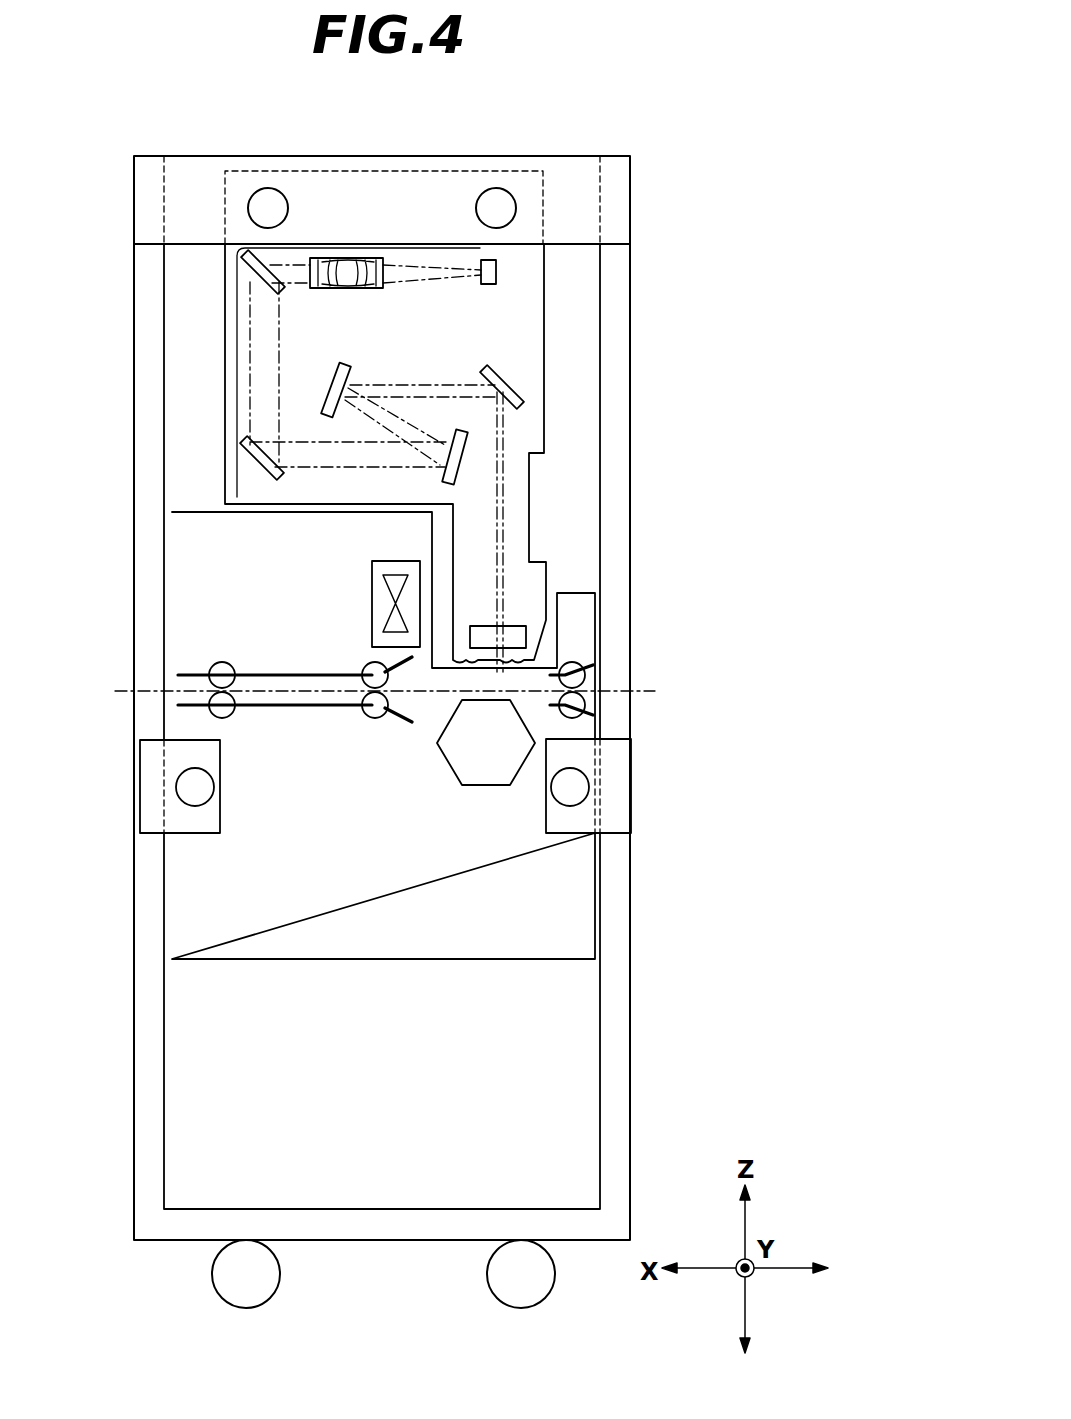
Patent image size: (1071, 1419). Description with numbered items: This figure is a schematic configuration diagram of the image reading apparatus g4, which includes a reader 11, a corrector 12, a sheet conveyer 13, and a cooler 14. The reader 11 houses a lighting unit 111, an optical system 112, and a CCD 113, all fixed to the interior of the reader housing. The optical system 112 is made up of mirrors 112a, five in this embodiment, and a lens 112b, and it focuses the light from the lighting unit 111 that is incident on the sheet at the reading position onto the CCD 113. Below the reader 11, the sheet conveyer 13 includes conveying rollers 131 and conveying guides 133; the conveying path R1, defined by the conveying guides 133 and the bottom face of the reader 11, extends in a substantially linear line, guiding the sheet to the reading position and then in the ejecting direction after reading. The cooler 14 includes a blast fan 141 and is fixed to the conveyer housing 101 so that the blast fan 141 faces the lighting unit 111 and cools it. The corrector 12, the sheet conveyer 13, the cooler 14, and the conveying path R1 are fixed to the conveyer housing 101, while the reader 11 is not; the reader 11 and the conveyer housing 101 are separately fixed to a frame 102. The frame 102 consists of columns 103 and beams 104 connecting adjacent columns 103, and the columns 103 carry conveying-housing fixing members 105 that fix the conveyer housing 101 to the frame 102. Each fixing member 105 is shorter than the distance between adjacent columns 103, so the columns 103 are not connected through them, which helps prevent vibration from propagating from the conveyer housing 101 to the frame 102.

The frame 102 is at (120, 542).
The beams 104 is at (568, 158).
The image reading apparatus g4 is at (596, 143).
The columns 103 is at (141, 931).
The conveying-housing fixing members 105 is at (143, 793).
The conveyer housing 101 is at (463, 959).
The reader 11 is at (423, 391).
The optical system 112 is at (233, 370).
The mirrors 112a is at (266, 262).
The lens 112b is at (350, 290).
The CCD 113 is at (490, 284).
The lighting unit 111 is at (528, 637).
The cooler 14 is at (341, 585).
The blast fan 141 is at (370, 597).
The sheet conveyer 13 is at (418, 702).
The conveying guides 133 is at (305, 705).
The conveying rollers 131 is at (572, 683).
The corrector 12 is at (490, 787).
The conveying path R1 is at (448, 693).